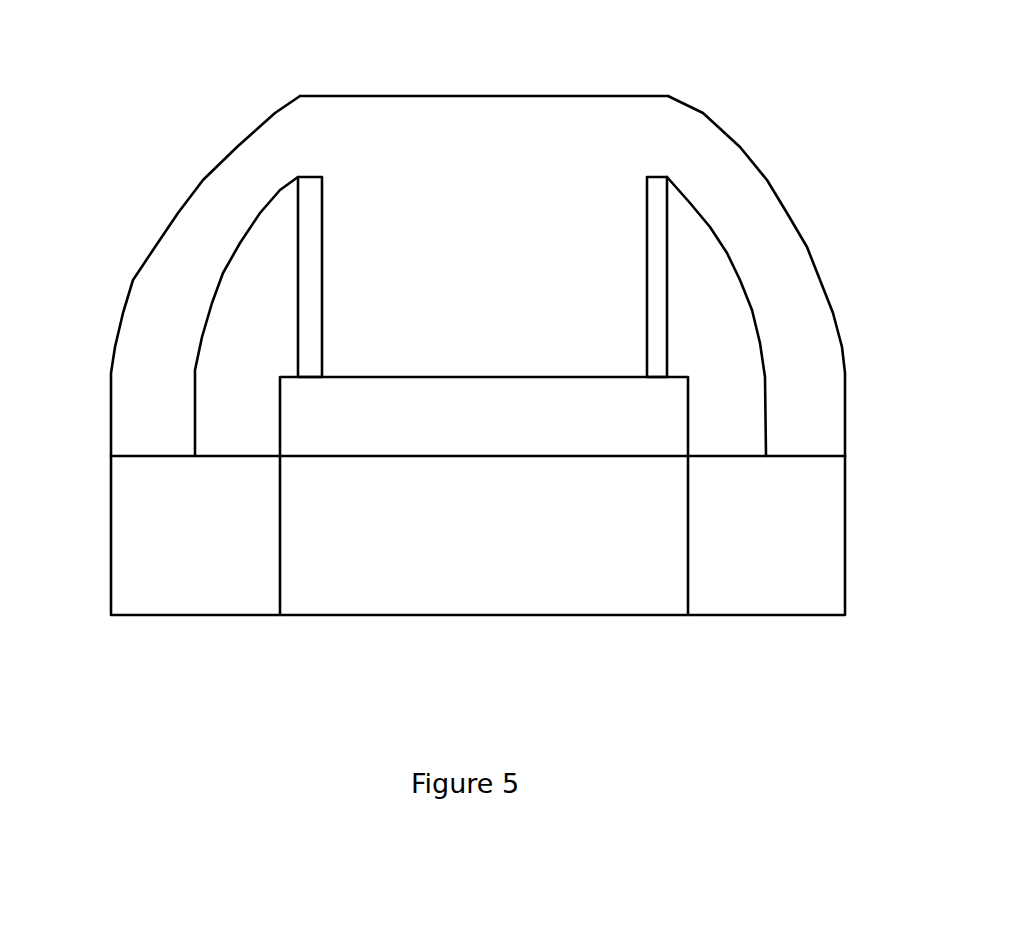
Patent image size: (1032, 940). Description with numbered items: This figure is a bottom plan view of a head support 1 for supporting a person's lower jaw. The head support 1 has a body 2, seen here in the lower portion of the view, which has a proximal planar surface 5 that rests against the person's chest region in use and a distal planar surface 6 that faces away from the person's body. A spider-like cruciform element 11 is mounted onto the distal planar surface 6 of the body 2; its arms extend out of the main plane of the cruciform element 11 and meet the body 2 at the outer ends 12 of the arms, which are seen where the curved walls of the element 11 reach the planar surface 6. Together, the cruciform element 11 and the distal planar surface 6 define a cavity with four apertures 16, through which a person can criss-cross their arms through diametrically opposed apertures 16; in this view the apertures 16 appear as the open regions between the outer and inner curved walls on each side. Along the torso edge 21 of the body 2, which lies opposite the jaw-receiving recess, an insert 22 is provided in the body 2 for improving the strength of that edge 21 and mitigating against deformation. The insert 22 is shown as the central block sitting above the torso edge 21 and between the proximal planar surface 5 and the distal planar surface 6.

The head support 1 is at (468, 228).
The spider-like cruciform element 11 is at (387, 115).
The apertures 16 is at (715, 265).
The distal planar surface 6 is at (740, 456).
The outer ends 12 is at (130, 445).
The insert 22 is at (553, 427).
The torso edge 21 is at (502, 598).
The proximal planar surface 5 is at (225, 618).
The body 2 is at (776, 612).